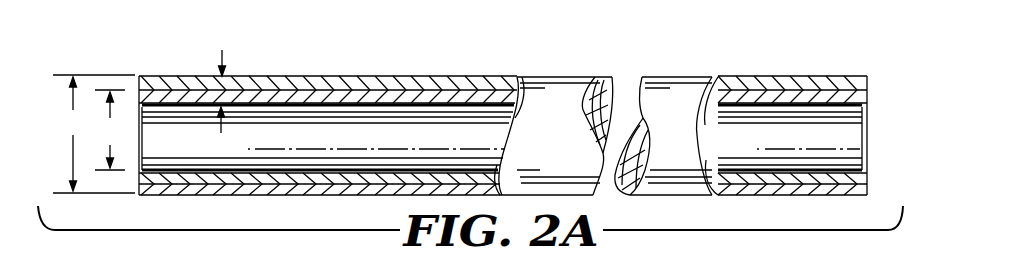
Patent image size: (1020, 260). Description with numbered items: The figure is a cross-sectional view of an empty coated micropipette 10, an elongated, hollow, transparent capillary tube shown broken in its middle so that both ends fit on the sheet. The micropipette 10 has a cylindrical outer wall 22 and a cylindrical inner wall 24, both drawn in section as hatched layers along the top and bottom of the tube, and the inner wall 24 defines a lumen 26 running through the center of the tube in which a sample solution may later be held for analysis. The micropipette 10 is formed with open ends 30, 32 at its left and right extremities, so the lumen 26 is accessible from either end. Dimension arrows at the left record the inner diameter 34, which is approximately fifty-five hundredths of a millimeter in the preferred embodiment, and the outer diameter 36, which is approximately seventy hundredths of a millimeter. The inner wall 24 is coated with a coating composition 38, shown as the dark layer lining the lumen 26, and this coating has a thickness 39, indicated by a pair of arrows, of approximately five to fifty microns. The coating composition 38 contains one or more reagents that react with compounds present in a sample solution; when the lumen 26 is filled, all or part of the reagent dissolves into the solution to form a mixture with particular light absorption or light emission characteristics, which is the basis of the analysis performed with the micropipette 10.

The micropipette 10 is at (740, 50).
The outer wall 22 is at (405, 80).
The inner wall 24 is at (465, 92).
The lumen 26 is at (364, 143).
The open end 30 is at (143, 142).
The open end 32 is at (868, 135).
The inner diameter 34 is at (107, 130).
The outer diameter 36 is at (94, 134).
The coating composition 38 is at (317, 108).
The thickness 39 is at (222, 55).